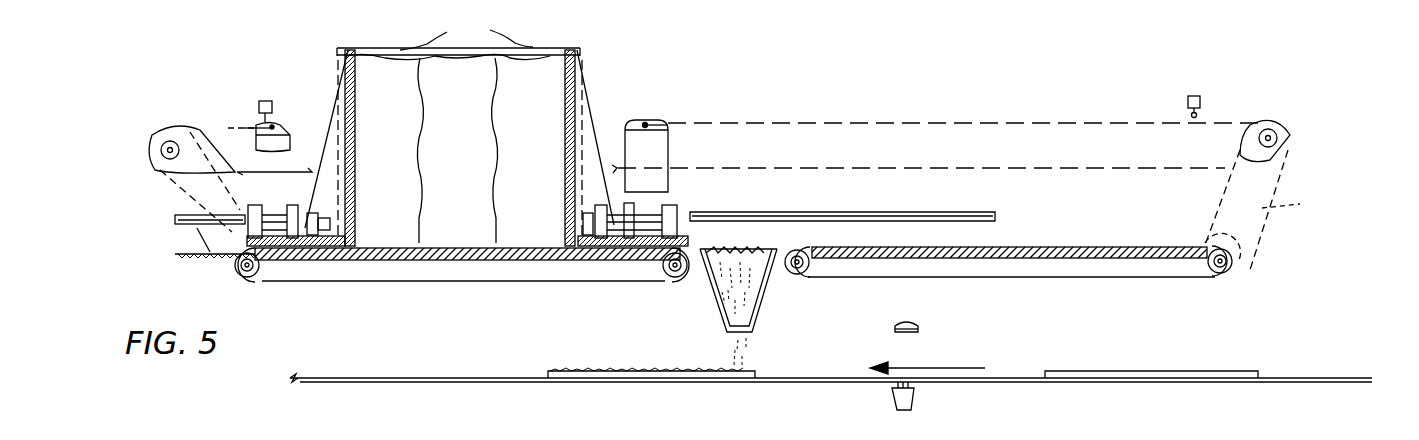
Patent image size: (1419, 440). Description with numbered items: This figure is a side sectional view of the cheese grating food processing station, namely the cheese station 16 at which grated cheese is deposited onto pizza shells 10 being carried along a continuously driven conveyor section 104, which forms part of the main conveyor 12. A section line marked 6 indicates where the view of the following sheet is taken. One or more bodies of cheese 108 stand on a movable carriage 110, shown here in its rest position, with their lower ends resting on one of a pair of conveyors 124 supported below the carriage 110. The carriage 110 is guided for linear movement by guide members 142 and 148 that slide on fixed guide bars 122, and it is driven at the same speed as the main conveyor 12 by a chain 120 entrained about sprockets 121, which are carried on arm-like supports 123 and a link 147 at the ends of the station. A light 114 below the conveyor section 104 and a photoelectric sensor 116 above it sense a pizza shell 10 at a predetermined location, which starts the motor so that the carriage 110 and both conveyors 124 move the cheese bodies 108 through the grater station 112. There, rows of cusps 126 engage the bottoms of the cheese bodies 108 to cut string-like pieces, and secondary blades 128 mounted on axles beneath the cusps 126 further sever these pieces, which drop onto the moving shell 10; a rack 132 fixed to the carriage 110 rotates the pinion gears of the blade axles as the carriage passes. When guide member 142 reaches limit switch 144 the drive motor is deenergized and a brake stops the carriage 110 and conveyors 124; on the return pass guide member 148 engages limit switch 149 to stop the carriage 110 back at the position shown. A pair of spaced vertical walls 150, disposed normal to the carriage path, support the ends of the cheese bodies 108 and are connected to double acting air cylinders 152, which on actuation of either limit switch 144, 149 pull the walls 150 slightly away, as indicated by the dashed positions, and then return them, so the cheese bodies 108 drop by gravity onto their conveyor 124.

The section line 6- 6 is at (175, 22).
The pizza shell 10 is at (770, 376).
The main conveyor 12 is at (1357, 333).
The cheese station 16 is at (1020, 75).
The conveyor section 104 is at (1370, 378).
The body of cheese 108 is at (460, 55).
The carriage 110 is at (598, 103).
The grater station 112 is at (757, 234).
The light 114 is at (885, 400).
The photoelectric sensor 116 is at (904, 319).
The chain 120 is at (217, 124).
The sprocket 121 is at (158, 148).
The guide bar 122 is at (175, 220).
The arm 123 is at (172, 190).
The conveyor 124 is at (458, 285).
The cusp 126 is at (688, 258).
The secondary blade 128 is at (700, 275).
The rack 132 is at (175, 254).
The guide member 142 is at (655, 153).
The limit switch 144 is at (1190, 96).
The link 147 is at (1307, 203).
The guide member 148 is at (300, 138).
The limit switch 149 is at (266, 101).
The vertical wall 150 is at (338, 68).
The double acting air cylinder 152 is at (272, 206).